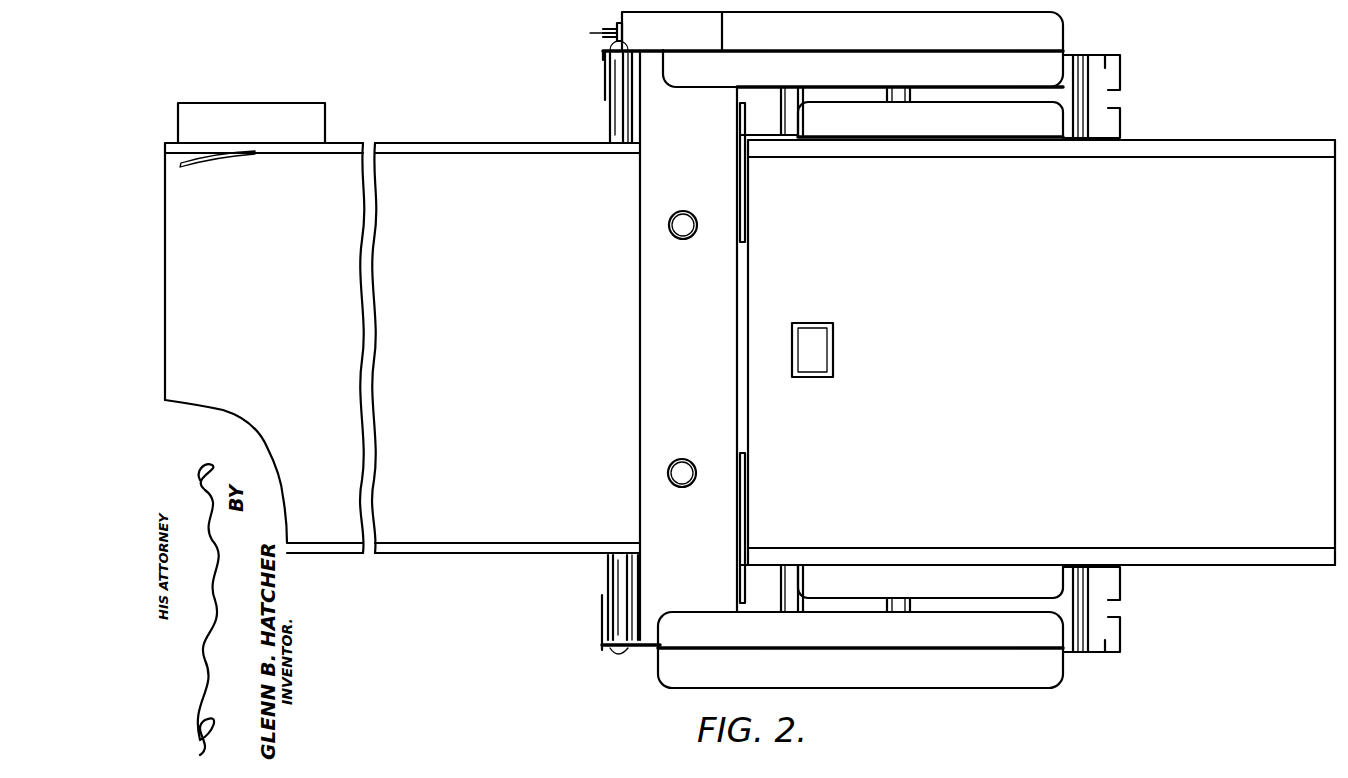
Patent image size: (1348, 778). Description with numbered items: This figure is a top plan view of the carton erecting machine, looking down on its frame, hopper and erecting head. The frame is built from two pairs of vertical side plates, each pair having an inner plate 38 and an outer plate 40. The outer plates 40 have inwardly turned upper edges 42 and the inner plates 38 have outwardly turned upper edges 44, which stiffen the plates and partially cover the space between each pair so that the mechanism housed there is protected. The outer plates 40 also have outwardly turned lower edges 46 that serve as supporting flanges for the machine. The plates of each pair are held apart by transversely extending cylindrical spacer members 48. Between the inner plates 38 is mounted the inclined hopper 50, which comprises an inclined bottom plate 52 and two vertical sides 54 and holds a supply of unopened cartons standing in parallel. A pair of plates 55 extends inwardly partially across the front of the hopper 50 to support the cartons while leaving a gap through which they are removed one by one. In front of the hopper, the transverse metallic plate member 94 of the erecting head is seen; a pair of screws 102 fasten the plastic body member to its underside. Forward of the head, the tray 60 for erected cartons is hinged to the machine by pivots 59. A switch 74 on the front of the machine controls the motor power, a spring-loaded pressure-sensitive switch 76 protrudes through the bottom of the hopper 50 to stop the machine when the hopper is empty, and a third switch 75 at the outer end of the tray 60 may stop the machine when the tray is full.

The inner plate 38 is at (1095, 140).
The outer plate 40 is at (1091, 353).
The inwardly turned upper edge 42 is at (997, 40).
The outwardly turned upper edge 44 is at (962, 141).
The outwardly turned lower edge 46 is at (837, 27).
The cylindrical spacer member 48 is at (890, 101).
The inclined hopper 50 is at (1254, 543).
The inclined bottom plate 52 is at (1040, 384).
The vertical side 54 is at (1200, 149).
The plate 55 is at (742, 209).
The pivot 59 is at (618, 118).
The tray 60 is at (497, 375).
The switch 74 is at (592, 33).
The third switch 75 is at (267, 115).
The pressure-sensitive switch 76 is at (820, 358).
The transverse metallic plate member 94 is at (649, 335).
The screw 102 is at (687, 238).